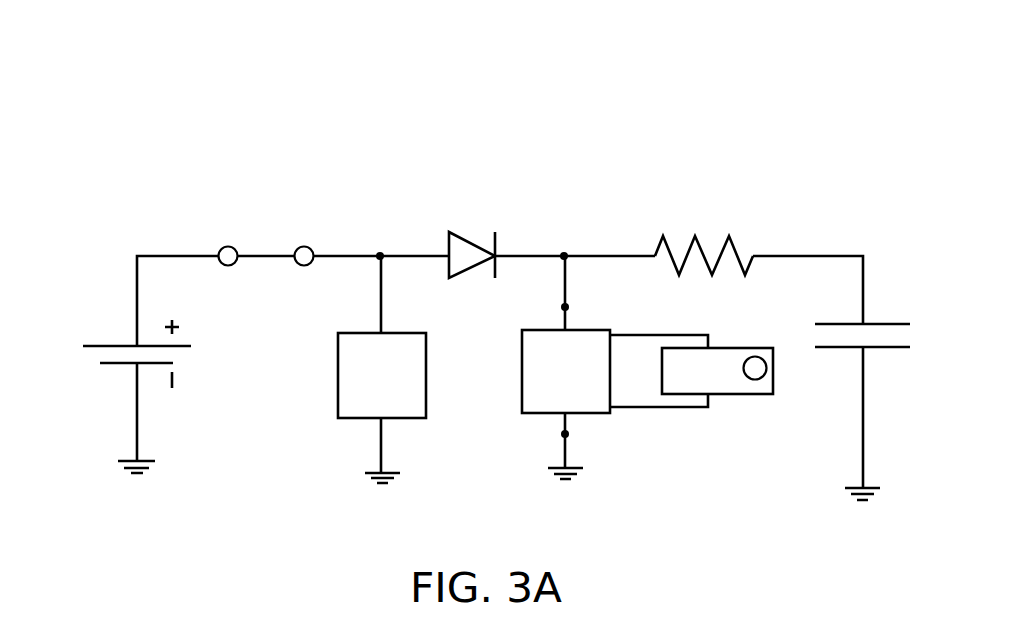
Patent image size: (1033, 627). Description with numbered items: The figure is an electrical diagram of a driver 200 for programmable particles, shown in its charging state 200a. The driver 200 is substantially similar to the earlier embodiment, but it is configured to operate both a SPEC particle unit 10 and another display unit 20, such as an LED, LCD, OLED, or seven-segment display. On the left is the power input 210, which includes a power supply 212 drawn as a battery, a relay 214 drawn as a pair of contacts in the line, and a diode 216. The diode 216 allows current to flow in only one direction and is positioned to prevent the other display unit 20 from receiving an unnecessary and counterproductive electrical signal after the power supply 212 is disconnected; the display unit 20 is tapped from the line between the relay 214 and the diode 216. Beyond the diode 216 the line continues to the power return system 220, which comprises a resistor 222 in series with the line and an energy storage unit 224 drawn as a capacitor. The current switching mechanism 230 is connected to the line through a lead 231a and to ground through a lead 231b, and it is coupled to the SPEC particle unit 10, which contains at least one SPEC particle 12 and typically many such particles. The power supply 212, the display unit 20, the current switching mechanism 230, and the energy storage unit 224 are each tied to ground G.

The driver 200 is at (217, 93).
The charging state 200a is at (563, 142).
The power input 210 is at (165, 200).
The power supply 212 is at (117, 330).
The relay 214 is at (265, 254).
The diode 216 is at (473, 240).
The power return system 220 is at (838, 203).
The resistor 222 is at (670, 243).
The energy storage unit 224 is at (843, 368).
The lead 231a is at (570, 309).
The lead 231b is at (570, 434).
The display unit 20 is at (382, 367).
The current switching mechanism 230 is at (595, 365).
The SPEC particle unit 10 is at (691, 410).
The SPEC particle 12 is at (747, 382).
The ground G is at (140, 476).